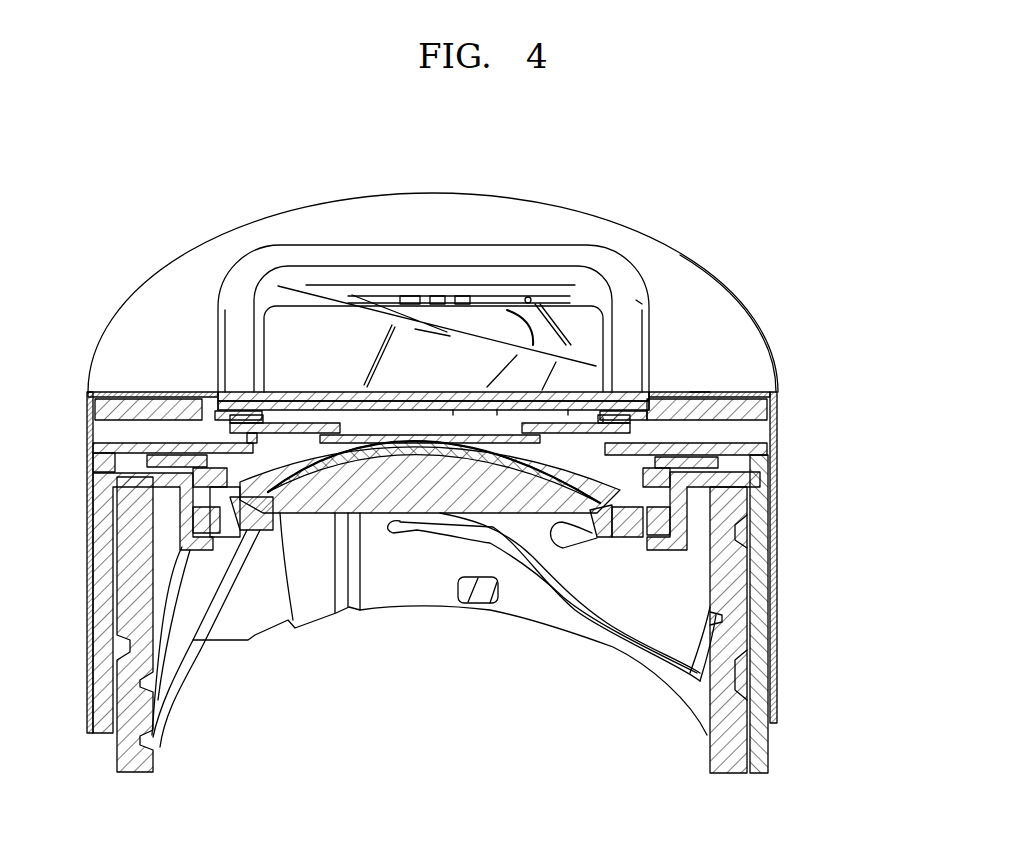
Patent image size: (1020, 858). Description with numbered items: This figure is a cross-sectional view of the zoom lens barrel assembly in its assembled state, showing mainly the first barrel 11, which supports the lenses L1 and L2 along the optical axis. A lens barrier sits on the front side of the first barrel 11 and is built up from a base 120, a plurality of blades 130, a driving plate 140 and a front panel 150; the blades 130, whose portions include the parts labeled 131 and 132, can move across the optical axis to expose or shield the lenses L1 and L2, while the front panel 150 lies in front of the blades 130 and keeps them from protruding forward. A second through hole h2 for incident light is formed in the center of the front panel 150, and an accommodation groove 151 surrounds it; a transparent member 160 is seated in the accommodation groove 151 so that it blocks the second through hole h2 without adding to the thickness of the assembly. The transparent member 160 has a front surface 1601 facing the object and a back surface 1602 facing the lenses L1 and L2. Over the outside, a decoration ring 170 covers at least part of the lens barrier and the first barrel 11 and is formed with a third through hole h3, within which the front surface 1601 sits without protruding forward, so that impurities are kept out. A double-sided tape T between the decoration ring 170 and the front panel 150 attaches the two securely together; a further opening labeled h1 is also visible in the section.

The first barrel 11 is at (762, 632).
The base 120 is at (752, 444).
The blades 130 is at (426, 596).
The first holder portion 131 is at (338, 460).
The second holder portion 132 is at (288, 442).
The driving plate 140 is at (732, 462).
The front panel 150 is at (780, 408).
The accommodation groove 151 is at (698, 392).
The transparent member 160 is at (482, 322).
The front surface 1601 is at (302, 392).
The back surface 1602 is at (328, 410).
The decoration ring 170 is at (752, 305).
The double-sided tape T is at (706, 392).
The lens L1 is at (497, 410).
The lens L2 is at (453, 410).
The first height h1 is at (603, 418).
The second through hole h2 is at (568, 410).
The third through hole h3 is at (632, 268).